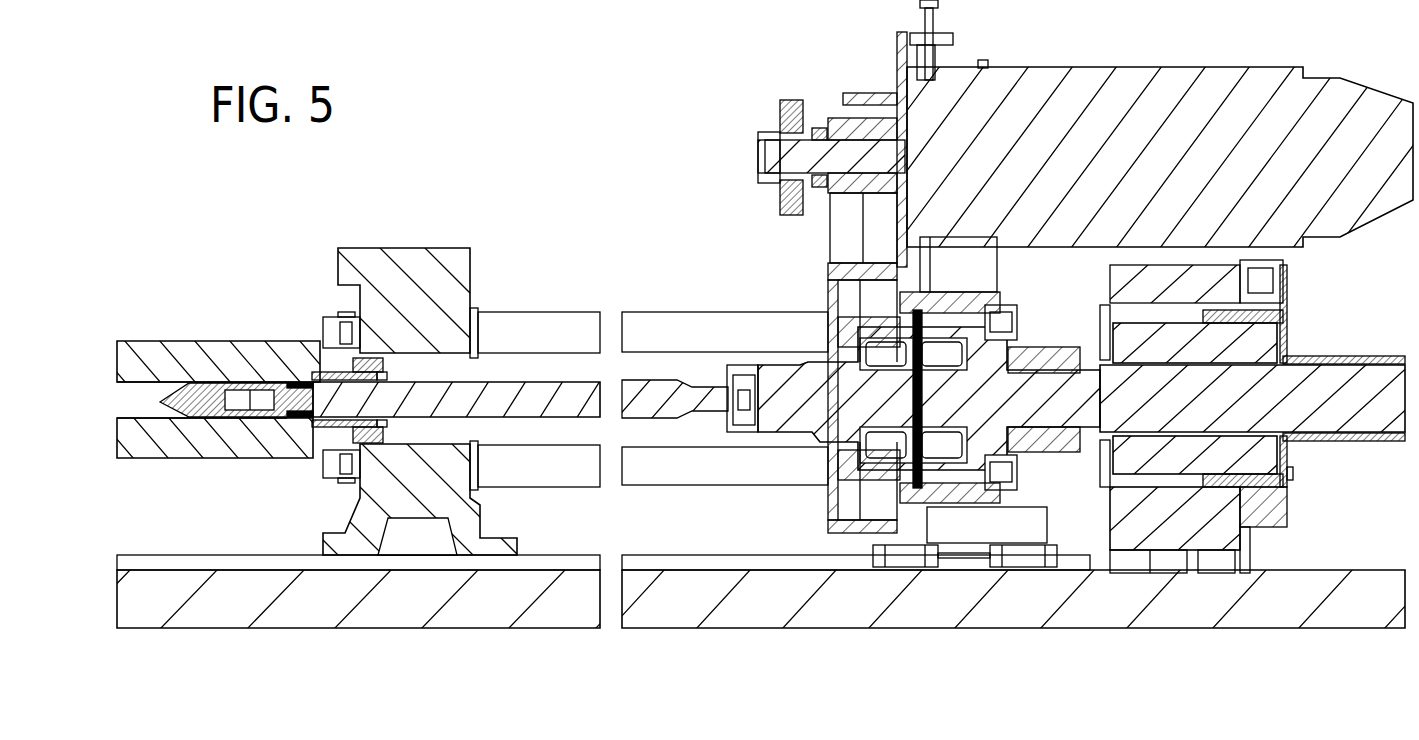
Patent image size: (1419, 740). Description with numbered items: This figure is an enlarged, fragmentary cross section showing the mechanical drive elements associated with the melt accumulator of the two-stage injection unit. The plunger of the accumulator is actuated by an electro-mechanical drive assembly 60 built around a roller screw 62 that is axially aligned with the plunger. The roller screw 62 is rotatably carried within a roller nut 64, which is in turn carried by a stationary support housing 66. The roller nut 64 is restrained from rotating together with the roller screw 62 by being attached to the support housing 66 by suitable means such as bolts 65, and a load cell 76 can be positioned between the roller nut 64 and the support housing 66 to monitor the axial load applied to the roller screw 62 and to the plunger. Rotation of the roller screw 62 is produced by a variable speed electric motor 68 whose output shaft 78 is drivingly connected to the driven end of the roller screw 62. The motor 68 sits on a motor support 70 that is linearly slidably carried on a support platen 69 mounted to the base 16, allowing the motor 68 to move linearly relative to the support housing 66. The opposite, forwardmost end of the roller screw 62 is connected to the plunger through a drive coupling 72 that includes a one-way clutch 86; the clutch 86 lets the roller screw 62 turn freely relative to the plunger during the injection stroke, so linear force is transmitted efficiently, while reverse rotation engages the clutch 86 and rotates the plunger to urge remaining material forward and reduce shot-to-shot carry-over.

The base 16 is at (1075, 615).
The electro-mechanical drive assembly 60 is at (736, 87).
The roller screw 62 is at (1335, 372).
The roller nut 64 is at (1262, 338).
The bolts 65 is at (1293, 477).
The stationary support housing 66 is at (1217, 531).
The variable speed electric motor 68 is at (1168, 78).
The support platen 69 is at (992, 530).
The motor support 70 is at (985, 275).
The drive coupling 72 is at (783, 445).
The load cell 76 is at (1272, 513).
The output shaft 78 is at (830, 155).
The one-way clutch 86 is at (1030, 345).